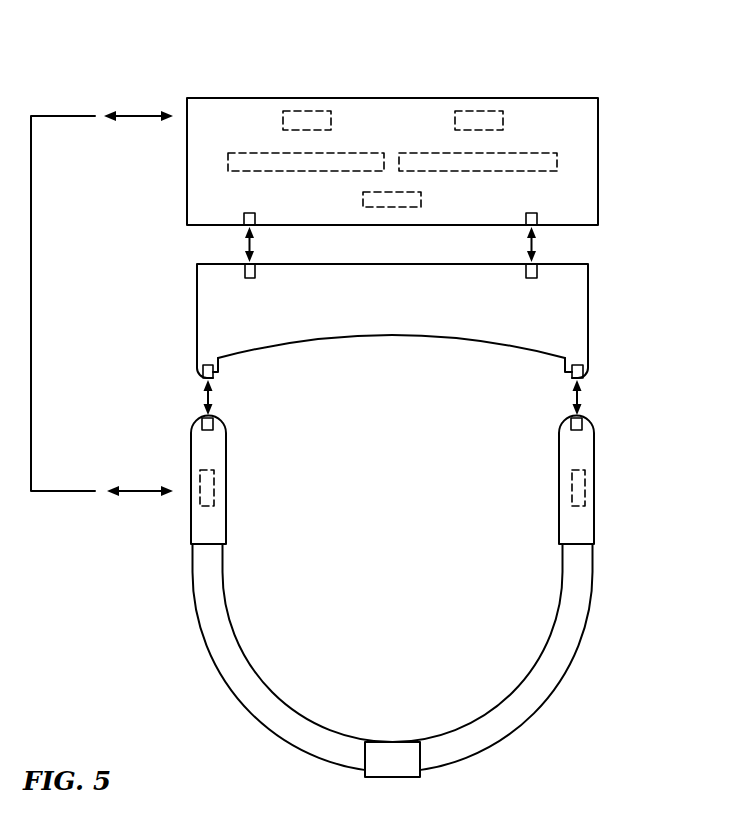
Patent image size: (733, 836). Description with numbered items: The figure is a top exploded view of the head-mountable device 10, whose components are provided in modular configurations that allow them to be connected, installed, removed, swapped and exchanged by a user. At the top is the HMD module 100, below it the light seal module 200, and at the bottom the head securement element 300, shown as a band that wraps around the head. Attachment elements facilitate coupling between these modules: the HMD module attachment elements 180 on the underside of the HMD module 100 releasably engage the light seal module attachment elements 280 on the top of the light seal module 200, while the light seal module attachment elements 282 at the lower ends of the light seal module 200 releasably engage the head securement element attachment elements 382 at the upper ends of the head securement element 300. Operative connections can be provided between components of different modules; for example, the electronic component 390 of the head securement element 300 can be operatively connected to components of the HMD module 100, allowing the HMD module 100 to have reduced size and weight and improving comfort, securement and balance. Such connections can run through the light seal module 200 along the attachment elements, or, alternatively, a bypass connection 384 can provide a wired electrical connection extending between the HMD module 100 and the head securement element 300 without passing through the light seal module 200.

The head-mountable device 10 is at (180, 78).
The HMD module 100 is at (187, 98).
The HMD module attachment elements 180 is at (256, 220).
The light seal module 200 is at (213, 314).
The light seal module attachment elements 280 is at (256, 271).
The light seal module attachment elements 282 is at (214, 372).
The head securement element 300 is at (193, 577).
The head securement element attachment elements 382 is at (214, 420).
The bypass connection 384 is at (39, 116).
The electronic component 390 is at (207, 489).